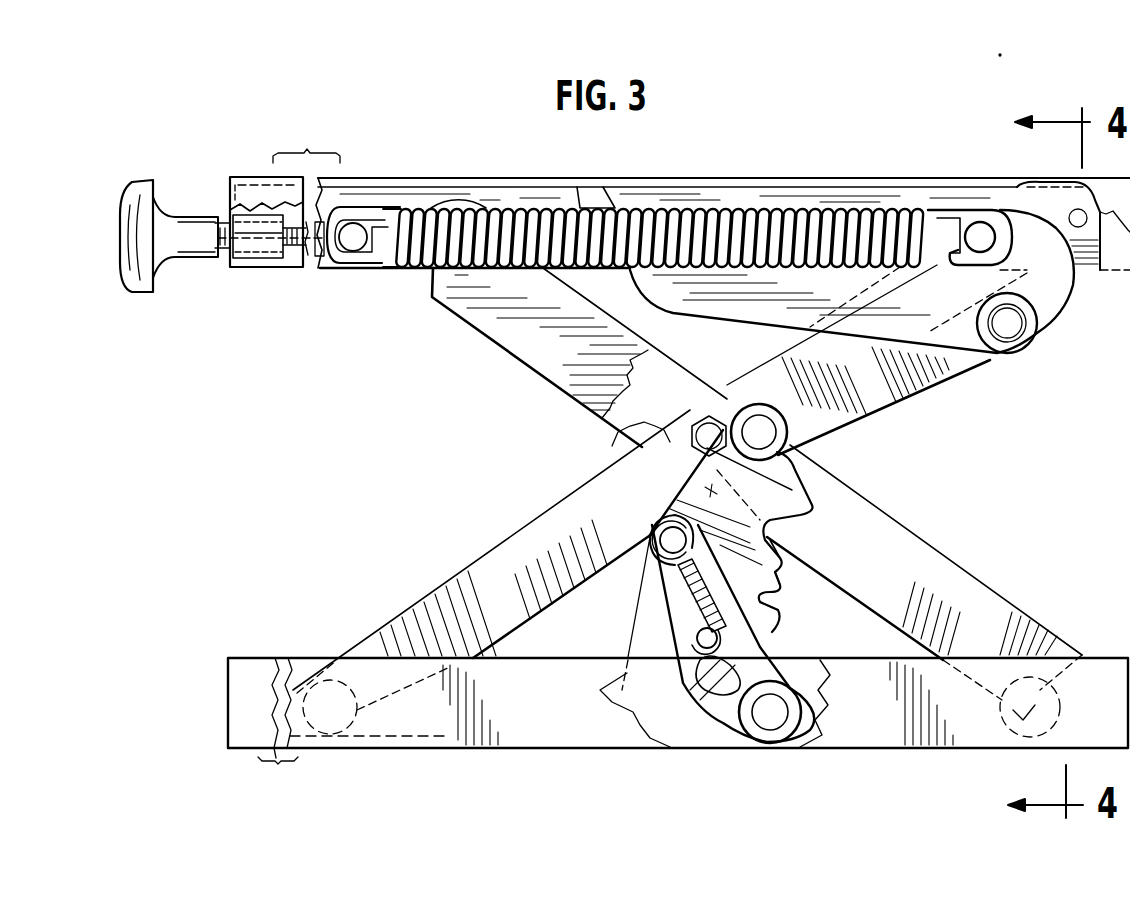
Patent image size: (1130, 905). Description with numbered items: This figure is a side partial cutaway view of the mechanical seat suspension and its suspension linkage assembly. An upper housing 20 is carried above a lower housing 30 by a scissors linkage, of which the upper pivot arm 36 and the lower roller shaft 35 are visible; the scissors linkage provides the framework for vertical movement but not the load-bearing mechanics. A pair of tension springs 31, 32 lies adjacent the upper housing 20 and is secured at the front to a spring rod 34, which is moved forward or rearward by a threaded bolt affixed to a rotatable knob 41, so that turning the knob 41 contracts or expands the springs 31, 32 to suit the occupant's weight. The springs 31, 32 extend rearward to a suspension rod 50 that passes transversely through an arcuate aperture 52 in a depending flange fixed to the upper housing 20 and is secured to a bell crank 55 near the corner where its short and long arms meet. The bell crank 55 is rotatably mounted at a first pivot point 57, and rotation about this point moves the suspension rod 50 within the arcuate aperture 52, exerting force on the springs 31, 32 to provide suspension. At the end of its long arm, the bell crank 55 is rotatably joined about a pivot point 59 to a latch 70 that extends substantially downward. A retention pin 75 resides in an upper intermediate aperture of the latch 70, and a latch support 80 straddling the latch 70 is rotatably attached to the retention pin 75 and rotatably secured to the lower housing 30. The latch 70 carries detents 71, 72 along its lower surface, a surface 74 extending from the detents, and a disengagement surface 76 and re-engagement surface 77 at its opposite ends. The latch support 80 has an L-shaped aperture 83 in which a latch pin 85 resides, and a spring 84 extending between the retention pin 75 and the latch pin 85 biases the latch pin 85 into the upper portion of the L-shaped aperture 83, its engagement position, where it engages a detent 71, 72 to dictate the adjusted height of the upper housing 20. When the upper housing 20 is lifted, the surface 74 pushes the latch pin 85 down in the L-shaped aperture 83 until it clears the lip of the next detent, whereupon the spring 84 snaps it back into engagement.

The upper housing 20 is at (928, 182).
The lower housing 30 is at (1105, 670).
The tension spring 31 is at (417, 272).
The tension spring 32 is at (970, 237).
The spring rod 34 is at (352, 240).
The lower roller shaft 35 is at (330, 720).
The upper pivot arm 36 is at (670, 375).
The rotatable knob 41 is at (145, 185).
The suspension rod 50 is at (980, 236).
The arcuate aperture 52 is at (1053, 253).
The bell crank 55 is at (943, 373).
The first pivot point 57 is at (1010, 330).
The pivot point 59 is at (762, 432).
The latch 70 is at (812, 490).
The detent 71 is at (780, 547).
The detent 72 is at (760, 588).
The surface 74 is at (800, 568).
The retention pin 75 is at (653, 523).
The disengagement surface 76 is at (643, 677).
The re-engagement surface 77 is at (816, 518).
The latch support 80 is at (728, 717).
The L-shaped aperture 83 is at (757, 660).
The spring 84 is at (657, 537).
The latch pin 85 is at (700, 640).